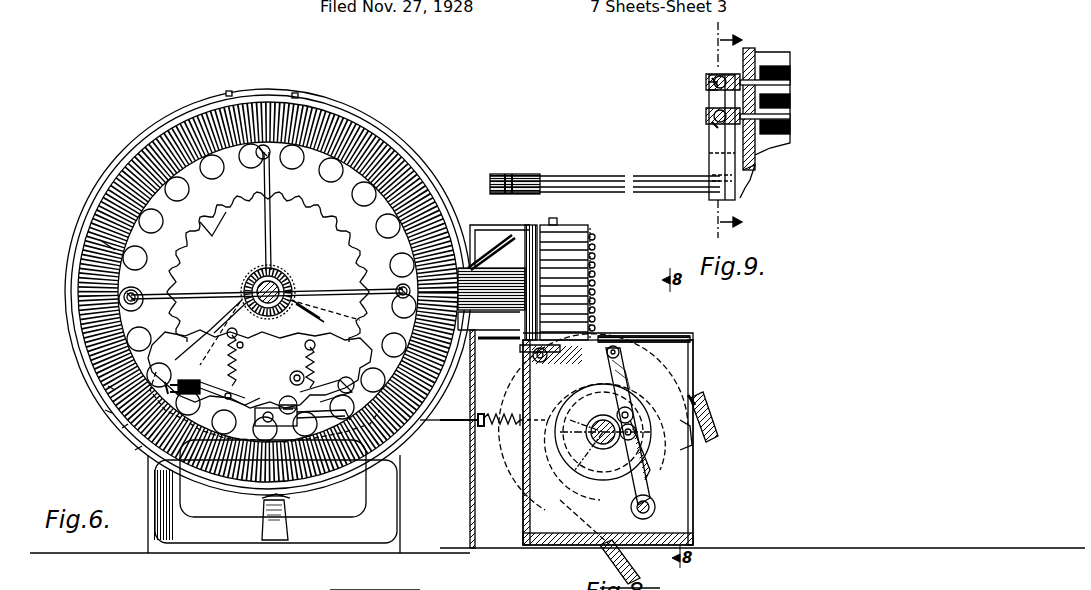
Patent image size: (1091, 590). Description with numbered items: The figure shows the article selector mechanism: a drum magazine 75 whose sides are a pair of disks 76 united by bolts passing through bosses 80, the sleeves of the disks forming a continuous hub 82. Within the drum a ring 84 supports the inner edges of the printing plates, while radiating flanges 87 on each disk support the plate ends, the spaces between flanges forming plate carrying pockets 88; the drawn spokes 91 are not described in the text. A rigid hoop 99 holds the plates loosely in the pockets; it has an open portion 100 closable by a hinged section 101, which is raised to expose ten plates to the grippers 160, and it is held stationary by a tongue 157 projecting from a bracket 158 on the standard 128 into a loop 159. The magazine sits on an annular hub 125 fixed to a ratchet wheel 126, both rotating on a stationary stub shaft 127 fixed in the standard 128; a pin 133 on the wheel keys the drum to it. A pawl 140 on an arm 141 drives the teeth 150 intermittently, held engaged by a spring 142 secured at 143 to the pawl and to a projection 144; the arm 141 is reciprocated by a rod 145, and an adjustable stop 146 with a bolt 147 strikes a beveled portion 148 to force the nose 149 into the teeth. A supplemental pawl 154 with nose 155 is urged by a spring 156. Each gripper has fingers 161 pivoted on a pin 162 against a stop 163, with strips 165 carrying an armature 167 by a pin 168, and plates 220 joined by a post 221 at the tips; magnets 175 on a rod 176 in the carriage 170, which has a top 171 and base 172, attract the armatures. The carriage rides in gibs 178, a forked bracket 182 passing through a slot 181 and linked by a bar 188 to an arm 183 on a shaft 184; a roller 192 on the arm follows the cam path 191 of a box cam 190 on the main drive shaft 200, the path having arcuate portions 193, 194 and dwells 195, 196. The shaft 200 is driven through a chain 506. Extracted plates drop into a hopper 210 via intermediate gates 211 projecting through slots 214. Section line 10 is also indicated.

In FIG. 6, the magazine 75 is at (226, 94).
In FIG. 6, the hoop 99 is at (340, 100).
In FIG. 6, the radiating flanges 87 is at (372, 115).
In FIG. 6, the plate carrying pockets 88 is at (415, 152).
In FIG. 6, the ratchet wheel 126 is at (100, 240).
In FIG. 6, the disks 76 is at (232, 205).
In FIG. 6, the ring 84 is at (150, 222).
In FIG. 6, the teeth 150 is at (226, 208).
In FIG. 6, the spoke 91 is at (270, 240).
In FIG. 6, the annular hub 125 is at (280, 268).
In FIG. 6, the hub 82 is at (288, 276).
In FIG. 6, the stub shaft 127 is at (292, 285).
In FIG. 6, the arm 141 is at (300, 296).
In FIG. 6, the projection 144 is at (222, 300).
In FIG. 6, the spring 142 is at (216, 335).
In FIG. 6, the bosses 80 is at (124, 296).
In FIG. 6, the spring 156 is at (340, 352).
In FIG. 6, the spring attachment point 143 is at (238, 345).
In FIG. 6, the pin 133 is at (305, 366).
In FIG. 6, the pawl 140 is at (200, 398).
In FIG. 6, the nose 155 is at (268, 398).
In FIG. 6, the pawl 154 is at (348, 500).
In FIG. 6, the standard 128 is at (312, 556).
In FIG. 6, the bracket 158 is at (262, 522).
In FIG. 6, the tongue 157 is at (262, 502).
In FIG. 6, the loop 159 is at (290, 503).
In FIG. 6, the nose 149 is at (108, 386).
In FIG. 6, the bolt 147 is at (105, 410).
In FIG. 6, the adjustable stop 146 is at (122, 428).
In FIG. 6, the beveled portion 148 is at (135, 450).
In FIG. 6, the grippers 160 is at (505, 272).
In FIG. 6, the hinged section 101 is at (480, 250).
In FIG. 6, the open portion 100 is at (478, 312).
In FIG. 6, the top 171 is at (548, 225).
In FIG. 9, the top 171 is at (760, 52).
In FIG. 6, the carriage 170 is at (580, 228).
In FIG. 8, the carriage 170 is at (643, 586).
In FIG. 6, the rod 176 is at (594, 262).
In FIG. 6, the magnets 175 is at (596, 292).
In FIG. 9, the magnets 175 is at (795, 100).
In FIG. 6, the base 172 is at (612, 340).
In FIG. 6, the gibs 178 is at (668, 330).
In FIG. 6, the slot 181 is at (690, 340).
In FIG. 6, the hopper 210 is at (493, 439).
In FIG. 6, the intermediate gates 211 is at (480, 345).
In FIG. 6, the forked bracket 182 is at (520, 352).
In FIG. 6, the arcuate portion 194 is at (522, 386).
In FIG. 6, the slots 214 is at (470, 420).
In FIG. 6, the rod 145 is at (452, 420).
In FIG. 6, the dwell 195 is at (548, 438).
In FIG. 6, the main drive shaft 200 is at (592, 455).
In FIG. 6, the arcuate portion 193 is at (612, 480).
In FIG. 6, the bar 188 is at (580, 366).
In FIG. 6, the shaft 184 is at (660, 510).
In FIG. 6, the cam path 191 is at (662, 488).
In FIG. 6, the dwell 196 is at (660, 410).
In FIG. 6, the arm 183 is at (640, 372).
In FIG. 6, the roller 192 is at (680, 445).
In FIG. 6, the chain 506 is at (712, 420).
In FIG. 6, the box cam 190 is at (548, 545).
In FIG. 9, the fingers 161 is at (588, 175).
In FIG. 9, the post 221 is at (488, 178).
In FIG. 9, the plates 220 is at (526, 178).
In FIG. 9, the pin 162 is at (728, 204).
In FIG. 9, the stop 163 is at (748, 170).
In FIG. 9, the strip 165 is at (705, 80).
In FIG. 9, the armature 167 is at (730, 76).
In FIG. 9, the pin 168 is at (712, 78).
In FIG. 8, the pin 168 is at (370, 589).
In FIG. 9, the section line 10 is at (718, 130).